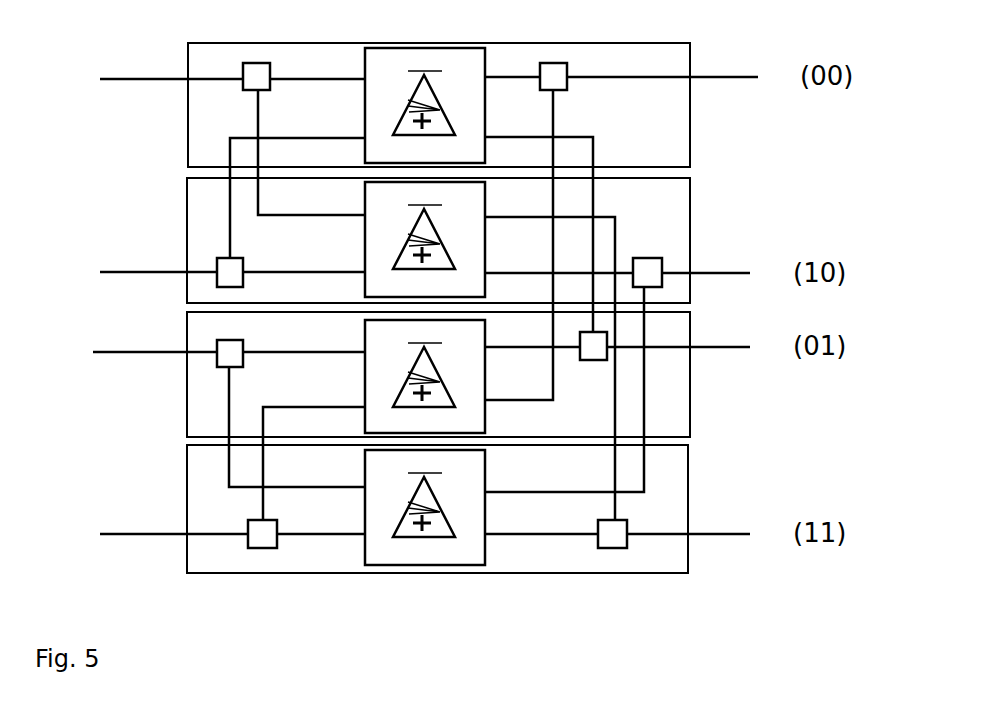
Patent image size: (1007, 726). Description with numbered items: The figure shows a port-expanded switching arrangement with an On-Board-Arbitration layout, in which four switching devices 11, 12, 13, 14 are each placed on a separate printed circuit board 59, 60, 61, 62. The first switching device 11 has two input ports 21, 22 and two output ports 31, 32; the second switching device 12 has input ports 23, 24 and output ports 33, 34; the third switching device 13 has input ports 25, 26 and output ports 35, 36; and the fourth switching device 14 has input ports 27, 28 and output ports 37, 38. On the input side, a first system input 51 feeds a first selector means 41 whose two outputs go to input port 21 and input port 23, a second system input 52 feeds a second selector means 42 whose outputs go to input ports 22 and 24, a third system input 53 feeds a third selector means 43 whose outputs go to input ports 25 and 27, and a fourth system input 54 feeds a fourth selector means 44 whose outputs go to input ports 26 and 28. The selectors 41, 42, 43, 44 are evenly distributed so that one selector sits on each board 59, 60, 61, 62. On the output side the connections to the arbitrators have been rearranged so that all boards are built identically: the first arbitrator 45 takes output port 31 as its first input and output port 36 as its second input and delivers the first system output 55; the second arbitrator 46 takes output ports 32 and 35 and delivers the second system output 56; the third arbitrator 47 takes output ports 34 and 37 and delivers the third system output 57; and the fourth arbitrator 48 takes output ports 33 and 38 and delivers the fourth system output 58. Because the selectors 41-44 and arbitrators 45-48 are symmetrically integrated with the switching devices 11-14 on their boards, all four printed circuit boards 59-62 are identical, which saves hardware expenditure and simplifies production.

The first switching device 11 is at (425, 105).
The second switching device 12 is at (425, 239).
The third switching device 13 is at (425, 376).
The fourth switching device 14 is at (425, 507).
The input port 21 is at (358, 77).
The input port 22 is at (358, 136).
The input port 23 is at (358, 214).
The input port 24 is at (358, 270).
The input port 25 is at (358, 350).
The input port 26 is at (358, 405).
The input port 27 is at (358, 486).
The input port 28 is at (358, 532).
The output port 31 is at (534, 76).
The output port 32 is at (518, 134).
The output port 33 is at (524, 216).
The output port 34 is at (518, 271).
The output port 35 is at (520, 345).
The output port 36 is at (518, 398).
The output port 37 is at (512, 490).
The output port 38 is at (540, 532).
The first selector means 41 is at (252, 60).
The second selector means 42 is at (222, 268).
The third selector means 43 is at (222, 347).
The fourth selector means 44 is at (264, 545).
The first arbitrator 45 is at (548, 60).
The second arbitrator 46 is at (594, 330).
The third arbitrator 47 is at (650, 270).
The fourth arbitrator 48 is at (618, 545).
The first system input 51 is at (118, 72).
The second system input 52 is at (116, 268).
The third system input 53 is at (108, 348).
The fourth system input 54 is at (112, 530).
The first system output 55 is at (746, 72).
The second system output 56 is at (738, 343).
The third system output 57 is at (740, 268).
The fourth system output 58 is at (734, 530).
The printed circuit board 59 is at (692, 158).
The printed circuit board 60 is at (692, 216).
The printed circuit board 61 is at (182, 386).
The printed circuit board 62 is at (690, 506).